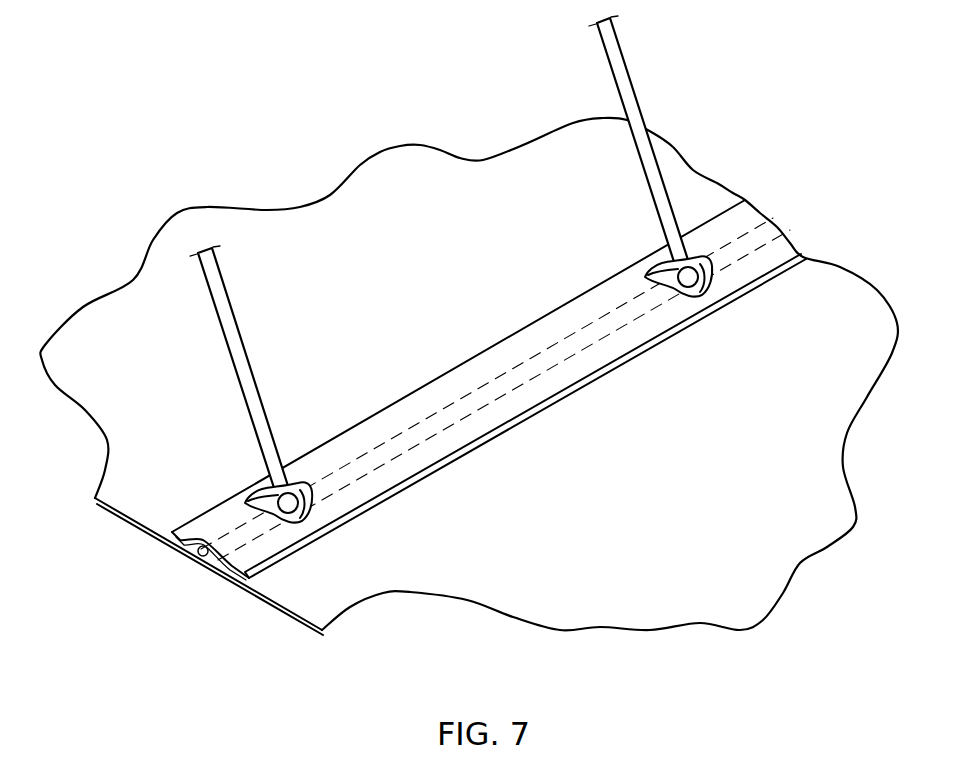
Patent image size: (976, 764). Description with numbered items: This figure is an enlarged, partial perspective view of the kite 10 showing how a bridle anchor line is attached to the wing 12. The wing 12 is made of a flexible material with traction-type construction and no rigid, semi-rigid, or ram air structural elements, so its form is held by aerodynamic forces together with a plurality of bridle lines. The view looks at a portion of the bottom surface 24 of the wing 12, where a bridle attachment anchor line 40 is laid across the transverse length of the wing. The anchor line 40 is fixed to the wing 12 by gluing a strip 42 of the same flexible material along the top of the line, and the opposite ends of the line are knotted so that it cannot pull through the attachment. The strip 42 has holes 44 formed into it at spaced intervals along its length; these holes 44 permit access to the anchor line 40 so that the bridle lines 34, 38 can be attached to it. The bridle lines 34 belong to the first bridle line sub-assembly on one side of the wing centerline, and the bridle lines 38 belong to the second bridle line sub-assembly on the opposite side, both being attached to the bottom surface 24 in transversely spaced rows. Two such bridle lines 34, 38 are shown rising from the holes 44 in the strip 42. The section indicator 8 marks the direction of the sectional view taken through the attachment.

The kite 10 is at (812, 113).
The wing 12 is at (810, 425).
The bottom surface 24 is at (465, 580).
The bridle lines 34 is at (439, 253).
The bridle lines 38 is at (609, 66).
The bridle attachment anchor line 40 is at (460, 413).
The strip 42 is at (390, 478).
The holes 44 is at (300, 523).
The section view indicator 8 is at (500, 315).